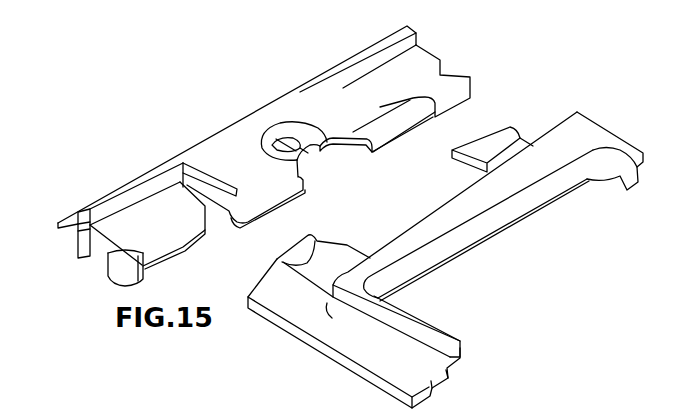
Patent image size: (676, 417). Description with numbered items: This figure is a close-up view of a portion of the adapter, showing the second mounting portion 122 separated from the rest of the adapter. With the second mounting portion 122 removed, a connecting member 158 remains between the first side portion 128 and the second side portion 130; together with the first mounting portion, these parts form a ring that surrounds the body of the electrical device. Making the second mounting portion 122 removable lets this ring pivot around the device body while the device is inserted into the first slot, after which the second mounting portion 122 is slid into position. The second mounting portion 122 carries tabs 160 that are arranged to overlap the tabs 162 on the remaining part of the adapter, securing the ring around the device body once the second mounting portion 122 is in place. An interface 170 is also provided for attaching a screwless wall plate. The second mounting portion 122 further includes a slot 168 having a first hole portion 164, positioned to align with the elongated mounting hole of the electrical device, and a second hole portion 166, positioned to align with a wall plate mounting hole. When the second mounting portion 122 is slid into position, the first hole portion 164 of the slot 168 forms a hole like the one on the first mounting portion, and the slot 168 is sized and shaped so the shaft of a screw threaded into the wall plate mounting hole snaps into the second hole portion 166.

The second mounting portion 122 is at (471, 60).
The first side portion 128 is at (397, 373).
The second side portion 130 is at (620, 176).
The connecting member 158 is at (497, 215).
The tabs 160 is at (237, 222).
The tabs 162 is at (311, 247).
The first hole portion 164 is at (333, 163).
The second hole portion 166 is at (272, 142).
The slot 168 is at (306, 138).
The interface 170 is at (55, 251).